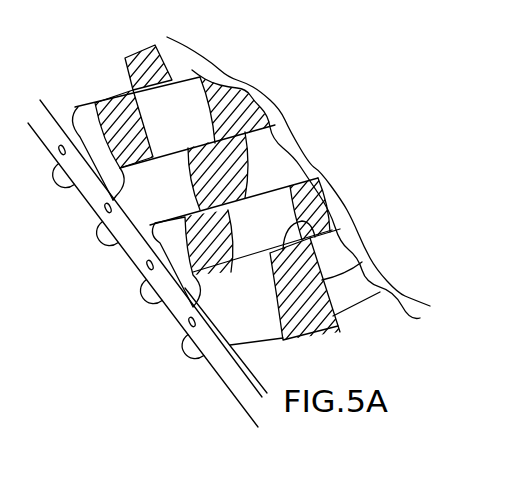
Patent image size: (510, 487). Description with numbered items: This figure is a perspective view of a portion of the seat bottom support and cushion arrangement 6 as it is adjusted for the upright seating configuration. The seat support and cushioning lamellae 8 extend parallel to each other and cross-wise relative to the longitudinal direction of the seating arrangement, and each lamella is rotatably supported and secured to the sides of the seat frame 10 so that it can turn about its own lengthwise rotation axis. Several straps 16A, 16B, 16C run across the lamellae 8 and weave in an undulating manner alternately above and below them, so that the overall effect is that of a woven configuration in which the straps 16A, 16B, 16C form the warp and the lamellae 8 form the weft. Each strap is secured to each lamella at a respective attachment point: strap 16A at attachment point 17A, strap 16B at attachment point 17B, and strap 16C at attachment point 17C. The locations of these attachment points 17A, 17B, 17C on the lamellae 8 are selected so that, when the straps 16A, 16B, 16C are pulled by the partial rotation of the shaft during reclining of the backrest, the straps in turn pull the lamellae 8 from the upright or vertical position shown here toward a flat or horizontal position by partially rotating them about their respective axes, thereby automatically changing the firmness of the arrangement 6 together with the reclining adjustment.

The seat support and cushion arrangement 6 is at (286, 95).
The seat support and cushioning lamellae 8 is at (195, 100).
The seat frame 10 is at (227, 367).
The strap 16A is at (117, 92).
The strap 16B is at (368, 251).
The strap 16C is at (313, 187).
The attachment point 17A is at (125, 133).
The attachment point 17B is at (337, 216).
The attachment point 17C is at (292, 177).